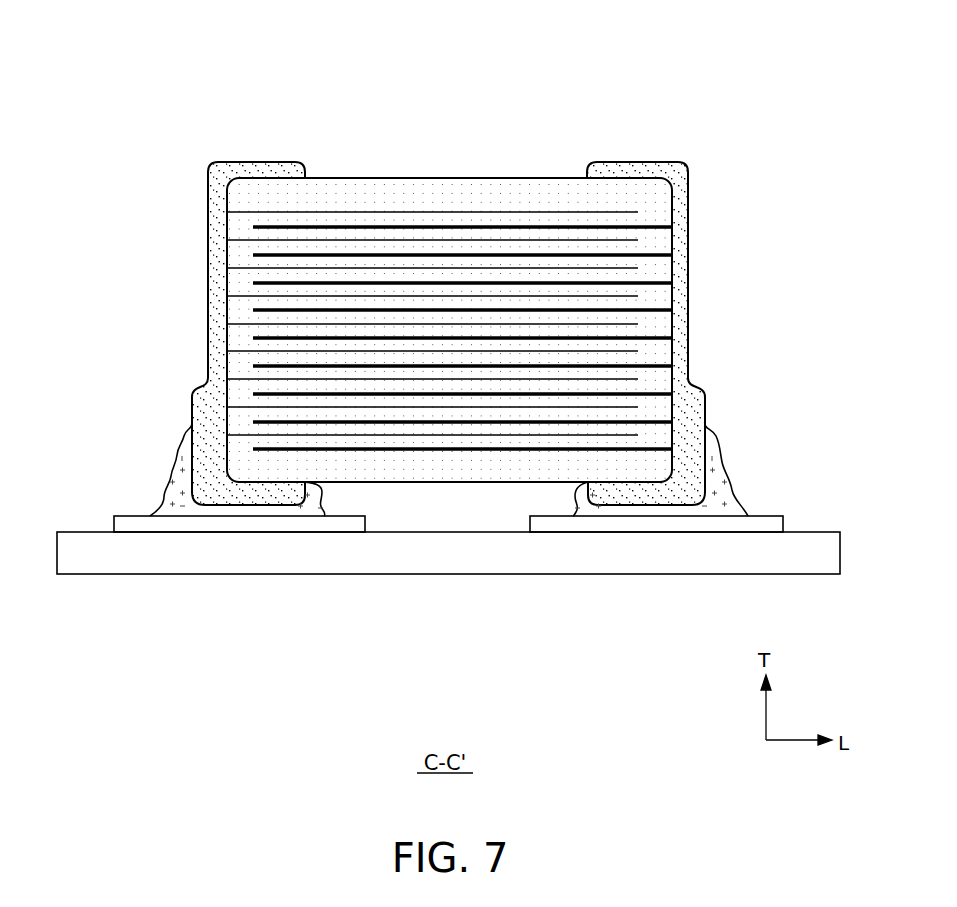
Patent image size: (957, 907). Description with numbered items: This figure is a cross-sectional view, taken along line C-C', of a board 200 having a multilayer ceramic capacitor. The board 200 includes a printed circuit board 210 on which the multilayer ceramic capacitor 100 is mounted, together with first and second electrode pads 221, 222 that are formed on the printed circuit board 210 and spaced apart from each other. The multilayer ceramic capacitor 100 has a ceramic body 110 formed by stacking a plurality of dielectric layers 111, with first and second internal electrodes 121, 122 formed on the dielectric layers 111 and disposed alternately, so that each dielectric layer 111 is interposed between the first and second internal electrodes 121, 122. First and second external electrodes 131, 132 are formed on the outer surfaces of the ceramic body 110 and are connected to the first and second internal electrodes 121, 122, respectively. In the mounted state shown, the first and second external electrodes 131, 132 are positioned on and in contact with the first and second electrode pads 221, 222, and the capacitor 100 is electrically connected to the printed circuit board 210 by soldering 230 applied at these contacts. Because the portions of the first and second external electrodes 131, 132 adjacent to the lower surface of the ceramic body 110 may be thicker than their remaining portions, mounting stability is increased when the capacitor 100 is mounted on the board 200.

The board having a multilayer ceramic capacitor 200 is at (244, 31).
The multilayer ceramic capacitor 100 is at (448, 283).
The ceramic body 110 is at (474, 178).
The dielectric layer 111 is at (565, 290).
The first internal electrode 121 is at (368, 239).
The second internal electrode 122 is at (435, 254).
The first external electrode 131 is at (251, 170).
The second external electrode 132 is at (630, 168).
The printed circuit board 210 is at (370, 560).
The first electrode pad 221 is at (183, 527).
The second electrode pad 222 is at (650, 525).
The soldering 230 is at (182, 471).